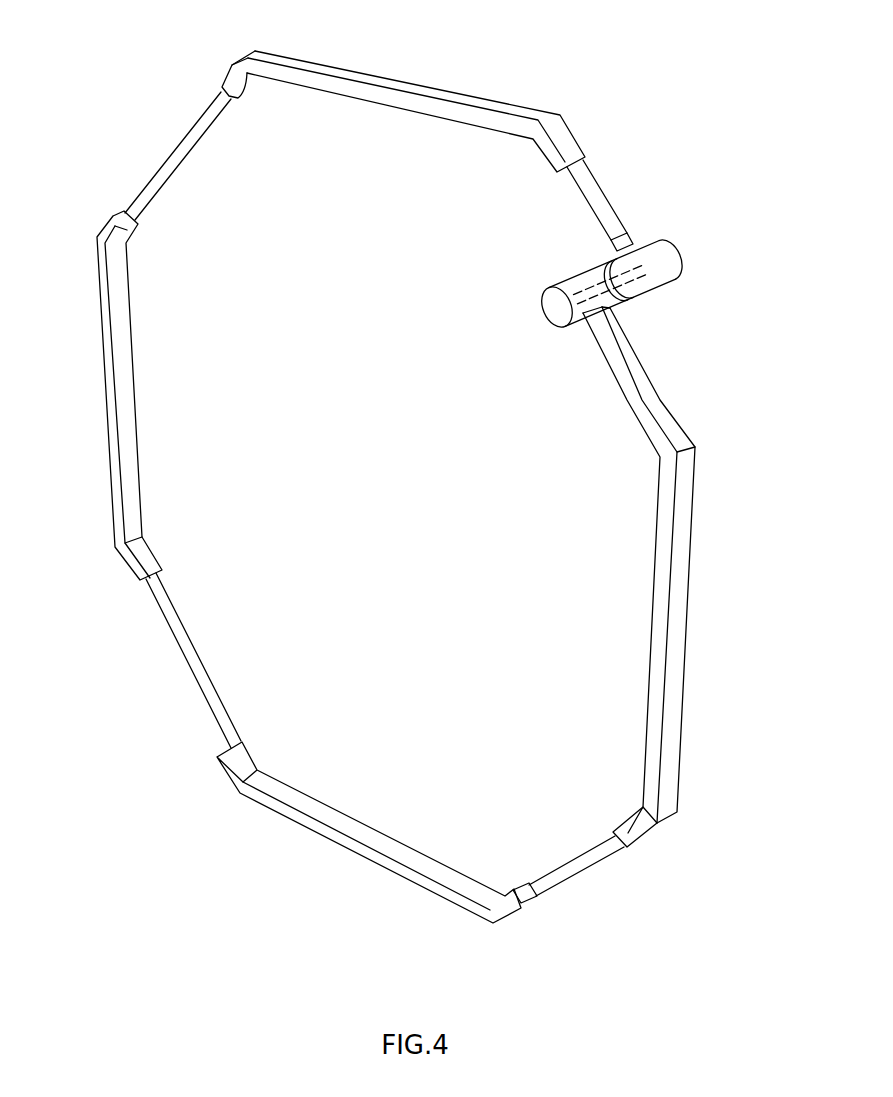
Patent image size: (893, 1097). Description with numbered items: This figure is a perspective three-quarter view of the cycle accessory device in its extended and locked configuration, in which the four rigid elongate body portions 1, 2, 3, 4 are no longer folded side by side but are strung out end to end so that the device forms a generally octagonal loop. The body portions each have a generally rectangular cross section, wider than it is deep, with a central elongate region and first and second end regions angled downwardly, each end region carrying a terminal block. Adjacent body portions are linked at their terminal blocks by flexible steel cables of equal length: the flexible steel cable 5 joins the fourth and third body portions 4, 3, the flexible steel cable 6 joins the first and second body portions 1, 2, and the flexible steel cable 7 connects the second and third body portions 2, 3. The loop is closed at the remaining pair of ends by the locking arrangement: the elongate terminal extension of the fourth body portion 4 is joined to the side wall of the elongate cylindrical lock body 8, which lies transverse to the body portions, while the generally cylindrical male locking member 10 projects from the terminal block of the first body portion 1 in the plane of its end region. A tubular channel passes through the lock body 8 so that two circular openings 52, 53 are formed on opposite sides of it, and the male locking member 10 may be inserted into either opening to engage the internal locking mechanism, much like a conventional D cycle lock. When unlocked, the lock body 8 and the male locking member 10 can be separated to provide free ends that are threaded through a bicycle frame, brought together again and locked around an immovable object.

The first body portion 1 is at (682, 582).
The second body portion 2 is at (358, 848).
The third body portion 3 is at (106, 467).
The fourth body portion 4 is at (472, 104).
The flexible steel cable 5 is at (183, 142).
The flexible steel cable 6 is at (562, 870).
The flexible steel cable 7 is at (195, 672).
The cylindrical lock body 8 is at (670, 258).
The male locking member 10 is at (597, 198).
The circular opening 52 is at (657, 287).
The circular opening 53 is at (640, 245).